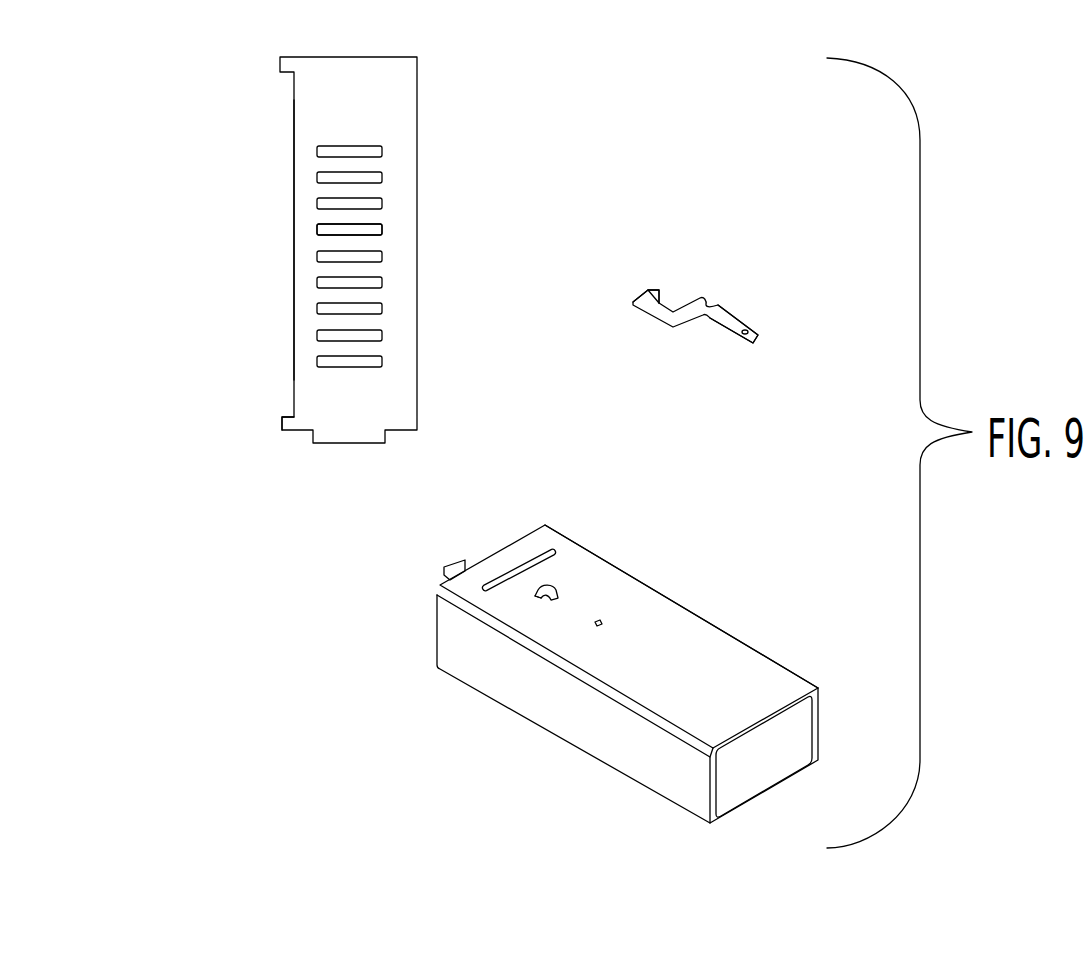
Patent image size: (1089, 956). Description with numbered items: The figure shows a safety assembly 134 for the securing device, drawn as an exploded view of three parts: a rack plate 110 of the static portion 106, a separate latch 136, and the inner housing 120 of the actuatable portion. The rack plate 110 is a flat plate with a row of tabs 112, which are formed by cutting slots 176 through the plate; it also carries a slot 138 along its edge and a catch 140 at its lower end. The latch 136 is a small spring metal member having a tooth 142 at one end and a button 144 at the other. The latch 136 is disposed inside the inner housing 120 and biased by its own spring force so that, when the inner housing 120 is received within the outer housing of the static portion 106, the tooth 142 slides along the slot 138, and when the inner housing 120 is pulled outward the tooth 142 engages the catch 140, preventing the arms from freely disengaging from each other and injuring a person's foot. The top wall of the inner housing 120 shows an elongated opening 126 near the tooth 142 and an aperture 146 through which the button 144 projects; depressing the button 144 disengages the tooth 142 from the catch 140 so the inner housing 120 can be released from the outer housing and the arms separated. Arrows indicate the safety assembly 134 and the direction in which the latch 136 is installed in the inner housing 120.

The static portion 106 is at (765, 608).
The rack plate 110 is at (407, 132).
The tabs 112 is at (362, 235).
The inner housing 120 is at (665, 618).
The slot 126 is at (548, 555).
The safety assembly 134 is at (620, 340).
The latch 136 is at (726, 368).
The slot 138 is at (283, 254).
The catch 140 is at (283, 417).
The tooth 142 is at (648, 290).
The button 144 is at (715, 302).
The aperture 146 is at (537, 595).
The slots 176 is at (377, 230).